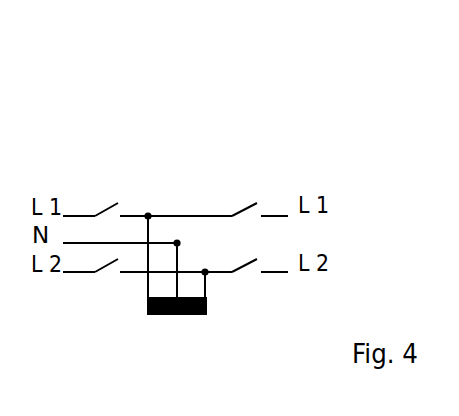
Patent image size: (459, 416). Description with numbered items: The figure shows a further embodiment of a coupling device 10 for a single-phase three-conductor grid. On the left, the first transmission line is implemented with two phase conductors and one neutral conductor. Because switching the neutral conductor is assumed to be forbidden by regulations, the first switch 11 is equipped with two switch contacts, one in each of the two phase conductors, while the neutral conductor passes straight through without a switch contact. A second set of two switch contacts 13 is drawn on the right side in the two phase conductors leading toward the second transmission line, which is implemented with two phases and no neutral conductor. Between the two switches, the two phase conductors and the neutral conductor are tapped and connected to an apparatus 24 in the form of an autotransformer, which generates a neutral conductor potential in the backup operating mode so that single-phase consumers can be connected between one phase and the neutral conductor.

The coupling device 10 is at (340, 74).
The first switch 11 is at (95, 185).
The second switch contacts (L1, L2 output side) 13 is at (257, 175).
The apparatus configured to generate a neutral conductor potential 24 is at (179, 320).